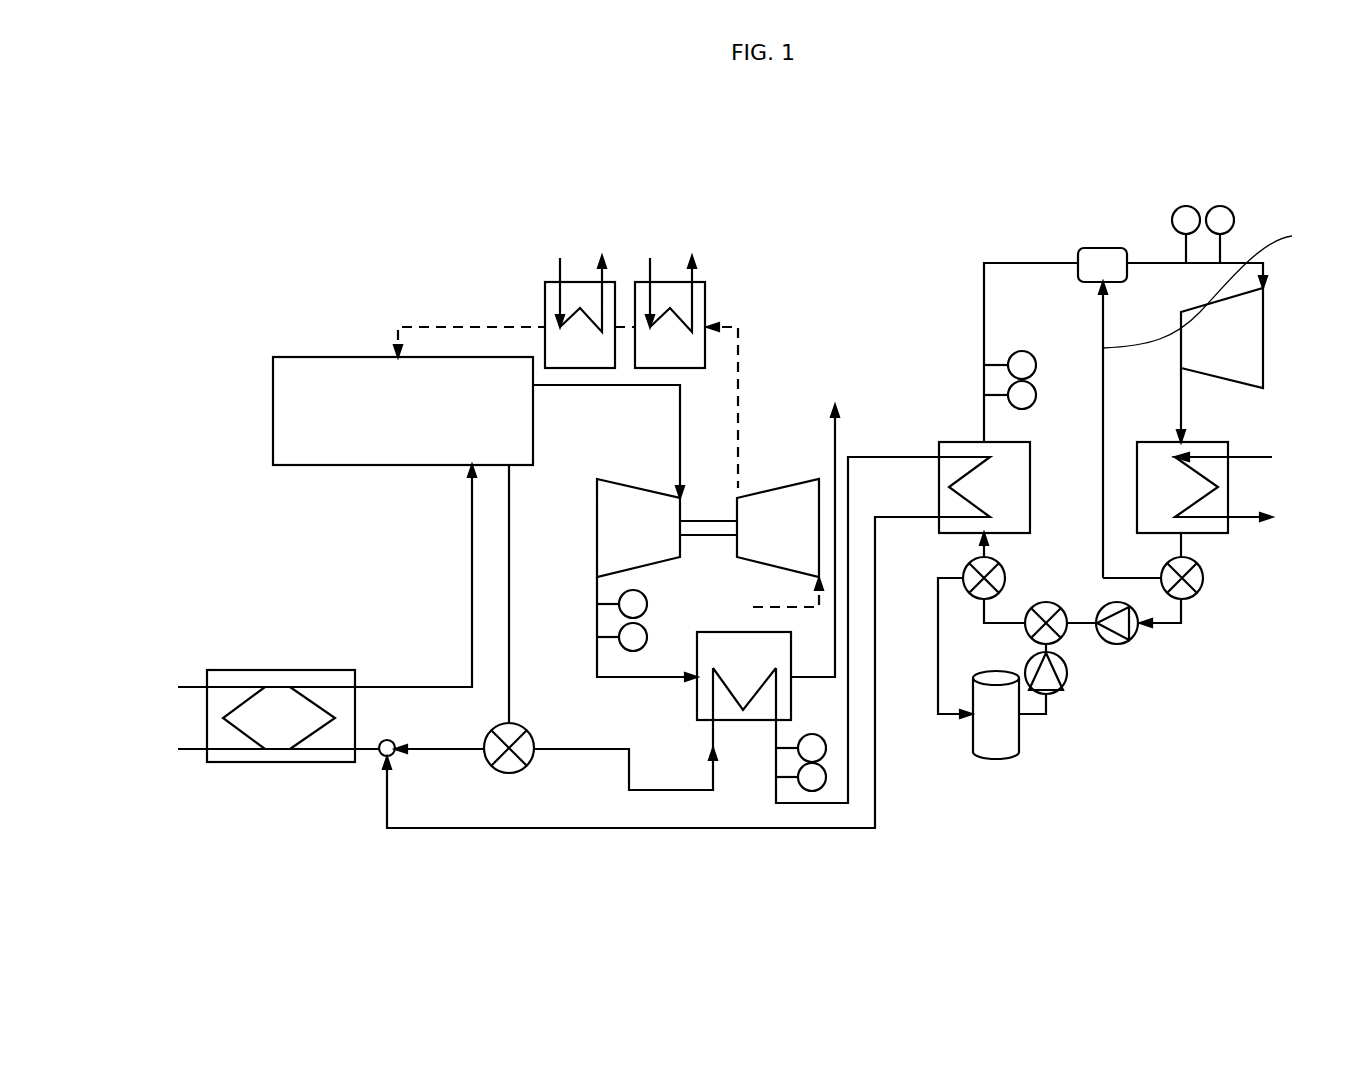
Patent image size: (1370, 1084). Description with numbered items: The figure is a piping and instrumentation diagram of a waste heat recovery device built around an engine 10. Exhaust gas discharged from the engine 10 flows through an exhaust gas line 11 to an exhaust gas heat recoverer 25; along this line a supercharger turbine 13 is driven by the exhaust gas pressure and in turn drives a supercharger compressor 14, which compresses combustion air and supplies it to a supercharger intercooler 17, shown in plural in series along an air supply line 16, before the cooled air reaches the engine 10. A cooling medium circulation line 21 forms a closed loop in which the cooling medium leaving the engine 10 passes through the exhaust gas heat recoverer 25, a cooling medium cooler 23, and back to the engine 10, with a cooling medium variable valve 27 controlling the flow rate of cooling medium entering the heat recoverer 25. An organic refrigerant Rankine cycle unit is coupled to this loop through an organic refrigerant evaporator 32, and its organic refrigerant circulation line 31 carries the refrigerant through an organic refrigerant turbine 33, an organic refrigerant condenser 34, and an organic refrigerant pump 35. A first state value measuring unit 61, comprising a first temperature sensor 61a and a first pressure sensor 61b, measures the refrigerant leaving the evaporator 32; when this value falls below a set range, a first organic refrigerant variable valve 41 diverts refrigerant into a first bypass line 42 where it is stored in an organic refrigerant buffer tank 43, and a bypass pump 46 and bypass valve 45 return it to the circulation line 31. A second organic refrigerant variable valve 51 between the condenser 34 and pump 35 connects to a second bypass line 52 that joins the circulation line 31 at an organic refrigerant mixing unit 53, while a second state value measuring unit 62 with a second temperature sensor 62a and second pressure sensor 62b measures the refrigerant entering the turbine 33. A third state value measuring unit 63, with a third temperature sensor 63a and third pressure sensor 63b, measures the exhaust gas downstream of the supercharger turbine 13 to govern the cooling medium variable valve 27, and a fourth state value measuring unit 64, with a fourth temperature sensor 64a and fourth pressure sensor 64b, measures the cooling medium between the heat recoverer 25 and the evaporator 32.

The engine 10 is at (333, 357).
The exhaust gas line 11 is at (680, 462).
The supercharger turbine 13 is at (642, 479).
The supercharger compressor 14 is at (792, 479).
The air supply line 16 is at (487, 325).
The supercharger intercooler 17 is at (662, 282).
The cooling medium circulation line 21 is at (645, 792).
The cooling medium cooler 23 is at (285, 762).
The exhaust gas heat recoverer 25 is at (760, 720).
The cooling medium variable valve 27 is at (503, 773).
The organic refrigerant circulation line 31 is at (1010, 263).
The organic refrigerant evaporator 32 is at (960, 442).
The organic refrigerant turbine 33 is at (1250, 352).
The organic refrigerant condenser 34 is at (1228, 446).
The organic refrigerant pump 35 is at (1135, 636).
The first organic refrigerant variable valve 41 is at (1005, 573).
The first bypass line 42 is at (938, 675).
The organic refrigerant buffer tank 43 is at (1010, 745).
The bypass valve 45 is at (1062, 636).
The bypass pump 46 is at (1057, 692).
The second organic refrigerant variable valve 51 is at (1203, 580).
The second bypass line 52 is at (1214, 286).
The organic refrigerant mixing unit 53 is at (1115, 248).
The first state value measuring unit 61 is at (951, 364).
The first temperature sensor 61a is at (1010, 360).
The first pressure sensor 61b is at (1010, 392).
The second state value measuring unit 62 is at (1234, 192).
The second temperature sensor 62a is at (1193, 207).
The second pressure sensor 62b is at (1193, 152).
The third state value measuring unit 63 is at (508, 607).
The third temperature sensor 63a is at (619, 598).
The third pressure sensor 63b is at (619, 633).
The fourth state value measuring unit 64 is at (878, 779).
The fourth temperature sensor 64a is at (826, 752).
The fourth pressure sensor 64b is at (826, 781).